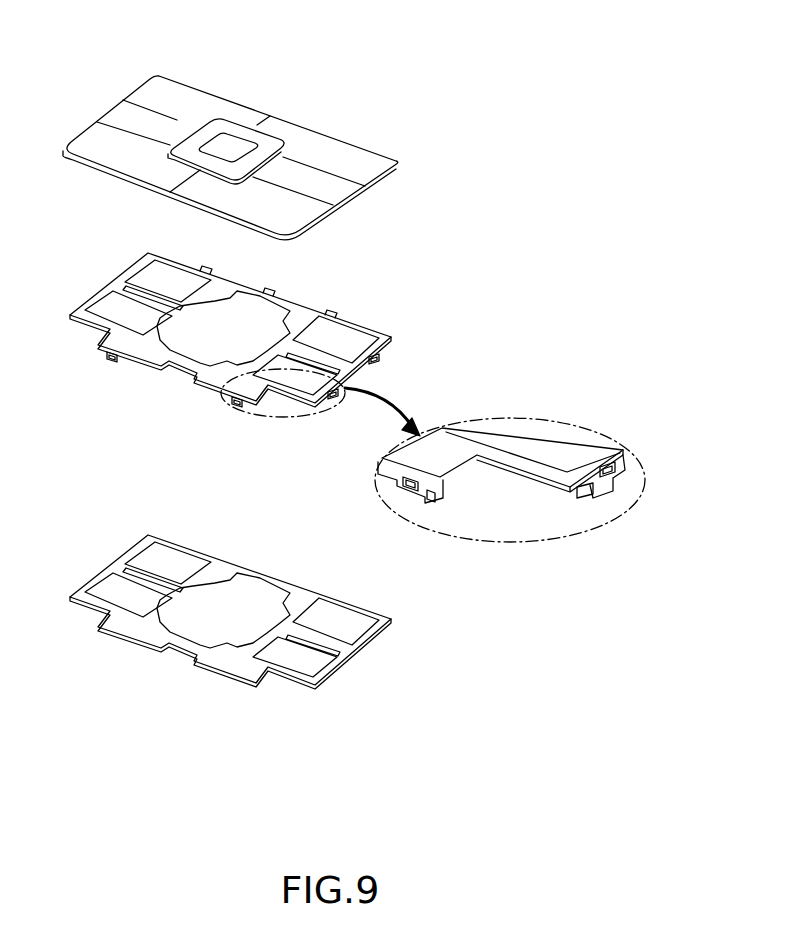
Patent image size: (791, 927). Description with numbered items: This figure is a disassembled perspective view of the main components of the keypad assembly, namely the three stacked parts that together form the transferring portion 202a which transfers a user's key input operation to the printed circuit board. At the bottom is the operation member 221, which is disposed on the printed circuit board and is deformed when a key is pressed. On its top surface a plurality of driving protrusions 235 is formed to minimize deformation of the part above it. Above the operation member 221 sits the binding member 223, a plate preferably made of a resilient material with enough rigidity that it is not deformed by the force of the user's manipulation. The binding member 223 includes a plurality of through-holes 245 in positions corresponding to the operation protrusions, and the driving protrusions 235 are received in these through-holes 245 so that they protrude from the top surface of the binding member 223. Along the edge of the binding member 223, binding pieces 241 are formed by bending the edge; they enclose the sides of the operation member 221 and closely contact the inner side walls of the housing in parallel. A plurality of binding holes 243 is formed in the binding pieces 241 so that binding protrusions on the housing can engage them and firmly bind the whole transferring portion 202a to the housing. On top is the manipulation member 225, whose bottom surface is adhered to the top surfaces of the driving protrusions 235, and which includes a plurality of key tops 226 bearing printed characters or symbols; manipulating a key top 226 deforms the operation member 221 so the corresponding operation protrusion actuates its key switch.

The transferring portion 202a is at (470, 32).
The manipulation member 225 is at (244, 101).
The key tops 226 is at (121, 103).
The binding member 223 is at (88, 300).
The through-holes 245 is at (348, 338).
The binding holes 243 is at (413, 485).
The binding pieces 241 is at (436, 502).
The operation member 221 is at (143, 635).
The driving protrusions 235 is at (103, 588).